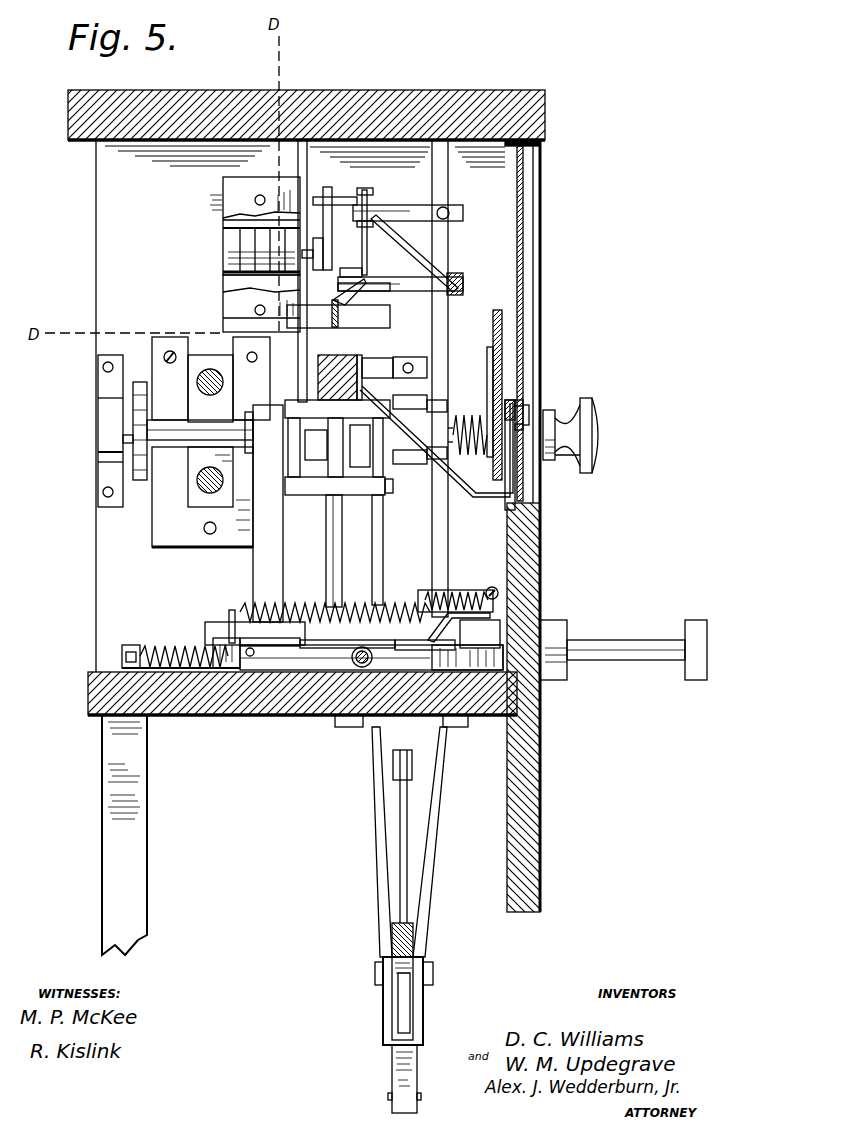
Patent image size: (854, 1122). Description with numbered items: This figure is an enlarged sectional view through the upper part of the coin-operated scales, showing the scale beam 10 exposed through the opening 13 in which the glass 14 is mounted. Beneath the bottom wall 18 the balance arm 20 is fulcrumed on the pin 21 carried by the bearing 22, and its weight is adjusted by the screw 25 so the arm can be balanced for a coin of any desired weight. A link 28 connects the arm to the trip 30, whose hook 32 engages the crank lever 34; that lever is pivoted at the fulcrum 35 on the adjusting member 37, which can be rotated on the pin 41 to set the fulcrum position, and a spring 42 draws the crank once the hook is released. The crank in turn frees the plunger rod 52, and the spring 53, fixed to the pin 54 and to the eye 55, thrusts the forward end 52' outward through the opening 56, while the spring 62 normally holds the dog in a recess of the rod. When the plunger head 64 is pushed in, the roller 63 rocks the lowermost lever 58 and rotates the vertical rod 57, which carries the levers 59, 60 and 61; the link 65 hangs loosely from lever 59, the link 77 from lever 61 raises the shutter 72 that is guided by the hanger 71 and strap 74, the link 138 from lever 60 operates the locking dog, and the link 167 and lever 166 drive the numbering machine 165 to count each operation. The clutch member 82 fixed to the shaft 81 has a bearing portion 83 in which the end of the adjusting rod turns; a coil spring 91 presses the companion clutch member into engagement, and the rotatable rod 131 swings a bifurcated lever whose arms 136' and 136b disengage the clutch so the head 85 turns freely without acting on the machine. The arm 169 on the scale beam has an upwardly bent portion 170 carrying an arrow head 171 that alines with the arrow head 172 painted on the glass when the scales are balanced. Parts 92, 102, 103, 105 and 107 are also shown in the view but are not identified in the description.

The scale beam 10 is at (332, 358).
The opening 13 is at (531, 236).
The glass 14 is at (524, 318).
The bottom wall 18 is at (268, 708).
The balance arm 20 is at (393, 939).
The pin 21 is at (376, 975).
The bearing 22 is at (373, 828).
The screw 25 is at (389, 1098).
The link 28 is at (405, 868).
The trip 30 is at (397, 722).
The hook 32 is at (443, 742).
The crank lever 34 is at (317, 665).
The fulcrum 35 is at (312, 603).
The adjusting member 37 is at (307, 660).
The pin 41 is at (298, 670).
The spring 42 is at (362, 724).
The plunger rod 52 is at (142, 656).
The forward end of plunger 52' is at (626, 640).
The spring 53 is at (393, 593).
The pin 54 is at (228, 614).
The eye 55 is at (492, 587).
The opening 56 is at (547, 692).
The vertical rod 57 is at (440, 320).
The lever 58 is at (546, 575).
The lever 59 is at (541, 547).
The lever 60 is at (470, 272).
The lever 61 is at (452, 202).
The spring 62 is at (182, 668).
The roller 63 is at (545, 612).
The plunger head 64 is at (697, 680).
The link 65 is at (443, 628).
The hanger 71 is at (486, 395).
The shutter 72 is at (526, 358).
The strap 74 is at (490, 375).
The link 77 is at (405, 240).
The shaft 81 is at (168, 445).
The clutch member 82 is at (318, 458).
The bearing portion 83 is at (249, 465).
The head 85 is at (584, 420).
The coil spring 91 is at (470, 453).
The nut 92 is at (140, 437).
The roller 102 is at (197, 382).
The roller 103 is at (200, 488).
The plate 105 is at (210, 365).
The plate 107 is at (165, 340).
The rotatable rod 131 is at (332, 543).
The arm of bifurcated lever 136' is at (411, 366).
The block 136b is at (406, 465).
The link 138 is at (345, 310).
The numbering machine 165 is at (248, 247).
The lever 166 is at (320, 197).
The link 167 is at (350, 195).
The arm 169 is at (472, 498).
The upwardly bent portion 170 is at (515, 473).
The arrow head 171 is at (530, 410).
The arrow head 172 is at (528, 420).